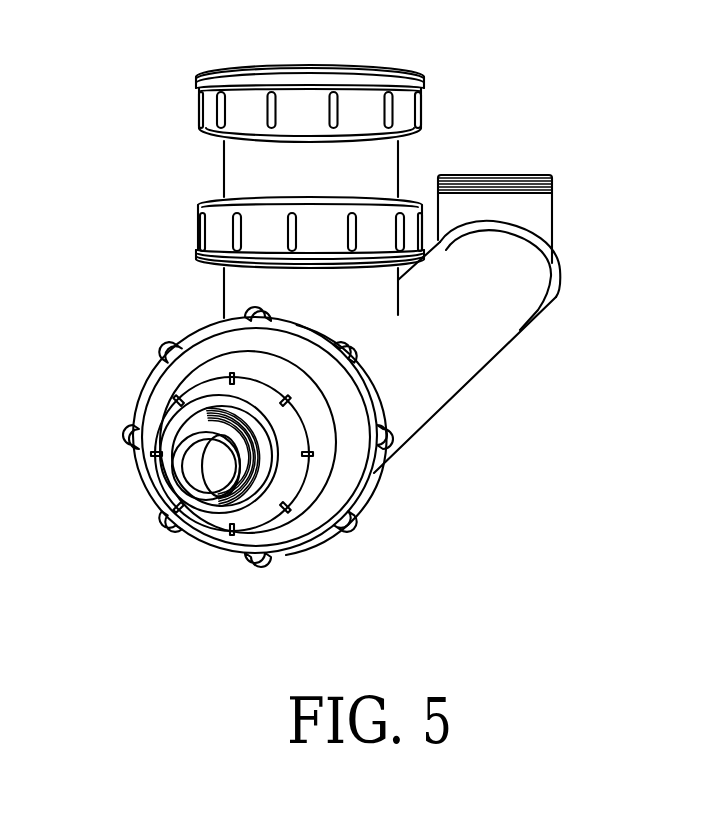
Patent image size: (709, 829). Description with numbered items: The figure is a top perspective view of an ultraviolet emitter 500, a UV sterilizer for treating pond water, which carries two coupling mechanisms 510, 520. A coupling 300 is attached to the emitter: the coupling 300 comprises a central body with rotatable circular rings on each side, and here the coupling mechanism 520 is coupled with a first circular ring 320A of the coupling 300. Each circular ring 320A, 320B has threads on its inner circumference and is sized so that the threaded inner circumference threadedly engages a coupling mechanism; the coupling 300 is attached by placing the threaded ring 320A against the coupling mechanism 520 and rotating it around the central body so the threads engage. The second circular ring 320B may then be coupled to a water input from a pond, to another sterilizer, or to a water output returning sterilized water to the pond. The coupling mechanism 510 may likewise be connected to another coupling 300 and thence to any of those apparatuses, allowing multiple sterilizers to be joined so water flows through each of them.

The ultraviolet emitter 500 is at (555, 73).
The coupling 300 is at (183, 160).
The first circular ring 320A is at (183, 229).
The second circular ring 320B is at (197, 97).
The coupling mechanism 510 is at (568, 185).
The coupling mechanism 520 is at (212, 290).